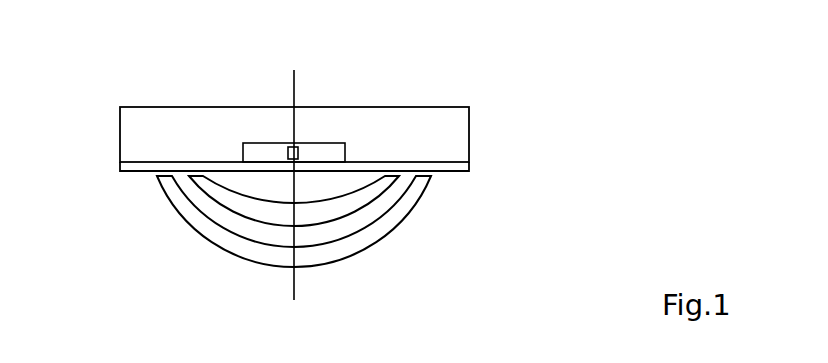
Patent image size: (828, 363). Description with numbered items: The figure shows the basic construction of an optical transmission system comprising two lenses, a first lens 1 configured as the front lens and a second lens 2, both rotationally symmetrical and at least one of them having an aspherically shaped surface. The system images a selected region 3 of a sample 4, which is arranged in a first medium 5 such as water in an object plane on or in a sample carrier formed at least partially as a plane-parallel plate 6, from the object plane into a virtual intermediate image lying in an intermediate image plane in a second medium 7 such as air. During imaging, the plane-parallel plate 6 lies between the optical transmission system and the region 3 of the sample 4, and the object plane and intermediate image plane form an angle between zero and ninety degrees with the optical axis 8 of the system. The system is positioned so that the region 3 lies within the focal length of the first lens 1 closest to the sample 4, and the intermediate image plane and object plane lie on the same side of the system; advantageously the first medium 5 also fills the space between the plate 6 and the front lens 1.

The first lens 1 is at (213, 192).
The second lens 2 is at (218, 237).
The selected region 3 is at (292, 146).
The sample 4 is at (257, 147).
The first medium 5 is at (413, 119).
The plane-parallel plate 6 is at (470, 167).
The second medium 7 is at (353, 225).
The optical axis 8 is at (295, 79).